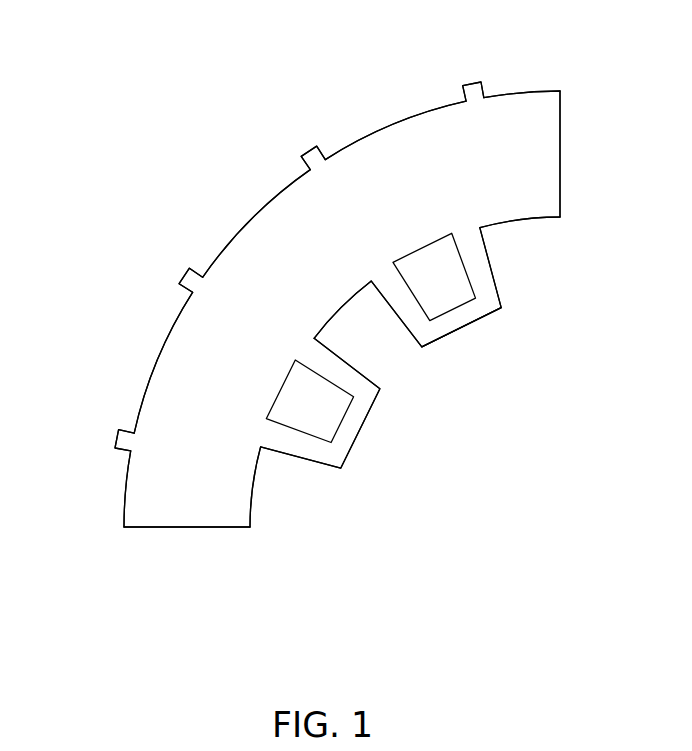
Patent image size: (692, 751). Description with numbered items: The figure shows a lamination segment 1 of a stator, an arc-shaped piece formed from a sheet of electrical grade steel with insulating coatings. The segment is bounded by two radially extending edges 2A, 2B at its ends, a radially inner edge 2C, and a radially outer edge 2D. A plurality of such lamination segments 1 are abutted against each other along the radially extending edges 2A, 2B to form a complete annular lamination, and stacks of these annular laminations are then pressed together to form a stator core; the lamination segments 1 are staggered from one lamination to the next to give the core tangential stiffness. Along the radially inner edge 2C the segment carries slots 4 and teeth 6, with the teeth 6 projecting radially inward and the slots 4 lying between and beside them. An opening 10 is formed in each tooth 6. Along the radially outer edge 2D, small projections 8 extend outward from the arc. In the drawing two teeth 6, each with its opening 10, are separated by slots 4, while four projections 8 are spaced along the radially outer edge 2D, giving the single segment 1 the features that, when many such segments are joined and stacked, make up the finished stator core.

The lamination segment 1 is at (108, 127).
The radially extending edge 2A is at (560, 152).
The radially extending edge 2B is at (188, 528).
The radially inner edge 2C is at (484, 314).
The radially outer edge 2D is at (248, 213).
The slot 4 is at (518, 247).
The tooth 6 is at (422, 325).
The projection 8 is at (469, 82).
The opening 10 is at (450, 283).